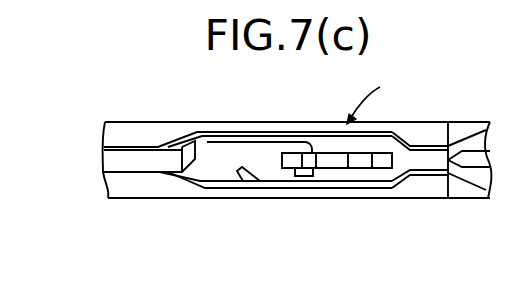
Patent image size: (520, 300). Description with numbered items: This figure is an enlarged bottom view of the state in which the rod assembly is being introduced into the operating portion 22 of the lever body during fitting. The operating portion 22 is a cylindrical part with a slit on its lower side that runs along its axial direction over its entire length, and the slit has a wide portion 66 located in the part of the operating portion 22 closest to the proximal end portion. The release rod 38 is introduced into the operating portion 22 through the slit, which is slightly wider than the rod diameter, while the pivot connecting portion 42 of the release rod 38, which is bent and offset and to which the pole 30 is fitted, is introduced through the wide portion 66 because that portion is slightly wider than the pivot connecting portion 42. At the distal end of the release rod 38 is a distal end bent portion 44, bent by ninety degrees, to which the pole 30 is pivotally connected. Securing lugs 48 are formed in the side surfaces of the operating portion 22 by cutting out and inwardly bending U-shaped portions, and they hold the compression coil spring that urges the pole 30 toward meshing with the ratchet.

The operating portion 22 is at (147, 129).
The pivot connecting portion 42 is at (246, 141).
The wide portion 66 is at (376, 99).
The release rod 38 is at (127, 157).
The securing lug 48 is at (246, 173).
The distal end bent portion 44 is at (304, 176).
The pole 30 is at (359, 158).